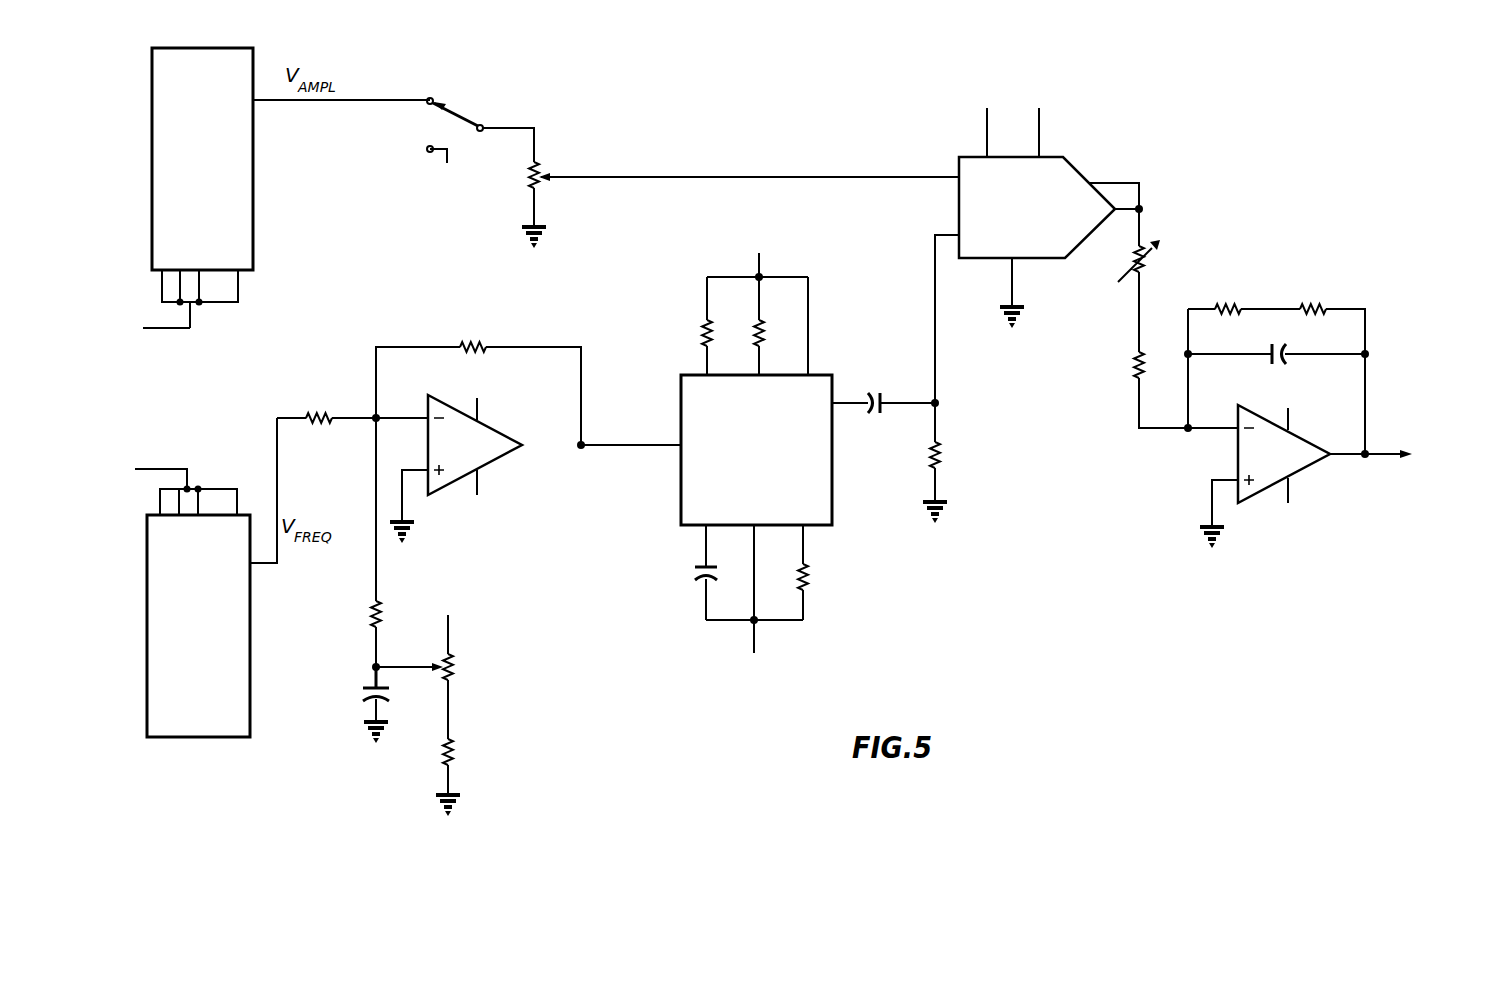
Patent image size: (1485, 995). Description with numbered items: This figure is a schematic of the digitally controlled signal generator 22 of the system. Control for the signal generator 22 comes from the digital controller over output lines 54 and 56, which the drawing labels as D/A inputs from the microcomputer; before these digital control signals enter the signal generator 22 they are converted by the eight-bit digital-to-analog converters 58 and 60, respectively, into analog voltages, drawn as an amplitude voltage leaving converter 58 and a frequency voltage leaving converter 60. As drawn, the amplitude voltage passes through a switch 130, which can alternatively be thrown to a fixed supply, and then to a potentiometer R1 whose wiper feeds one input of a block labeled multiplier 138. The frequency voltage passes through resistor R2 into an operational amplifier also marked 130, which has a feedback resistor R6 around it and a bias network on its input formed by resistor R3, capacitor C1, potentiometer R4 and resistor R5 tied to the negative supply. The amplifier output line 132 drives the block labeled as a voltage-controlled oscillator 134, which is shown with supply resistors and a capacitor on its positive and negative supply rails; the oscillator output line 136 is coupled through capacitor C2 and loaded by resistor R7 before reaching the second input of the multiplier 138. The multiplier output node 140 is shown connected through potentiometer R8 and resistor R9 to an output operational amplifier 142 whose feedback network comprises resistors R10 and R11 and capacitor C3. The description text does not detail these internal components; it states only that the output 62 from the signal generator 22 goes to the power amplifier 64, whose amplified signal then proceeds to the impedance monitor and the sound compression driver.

The signal generator 22 is at (795, 110).
The digital-to-analog converter 58 is at (210, 85).
The output line 54 is at (165, 329).
The output line 56 is at (179, 471).
The digital-to-analog converter 60 is at (210, 565).
The switch / operational amplifier 130 is at (437, 80).
The op amp output line to VCO 132 is at (603, 449).
The voltage controlled oscillator 134 is at (682, 418).
The VCO output line 136 is at (862, 406).
The multiplier 138 is at (1068, 166).
The multiplier output junction 140 is at (1144, 222).
The output operational amplifier 142 is at (1300, 456).
The output 62 is at (1380, 462).
The power amplifier 64 is at (1447, 469).
The potentiometer R1 is at (542, 186).
The resistor R2 is at (322, 413).
The resistor R3 is at (362, 603).
The potentiometer R4 is at (457, 663).
The resistor R5 is at (455, 746).
The feedback resistor R6 is at (462, 344).
The resistor R7 is at (941, 456).
The potentiometer R8 is at (1130, 282).
The resistor R9 is at (1132, 370).
The feedback resistor R10 is at (1224, 302).
The feedback resistor R11 is at (1304, 302).
The capacitor C1 is at (362, 688).
The coupling capacitor C2 is at (882, 392).
The feedback capacitor C3 is at (1290, 358).